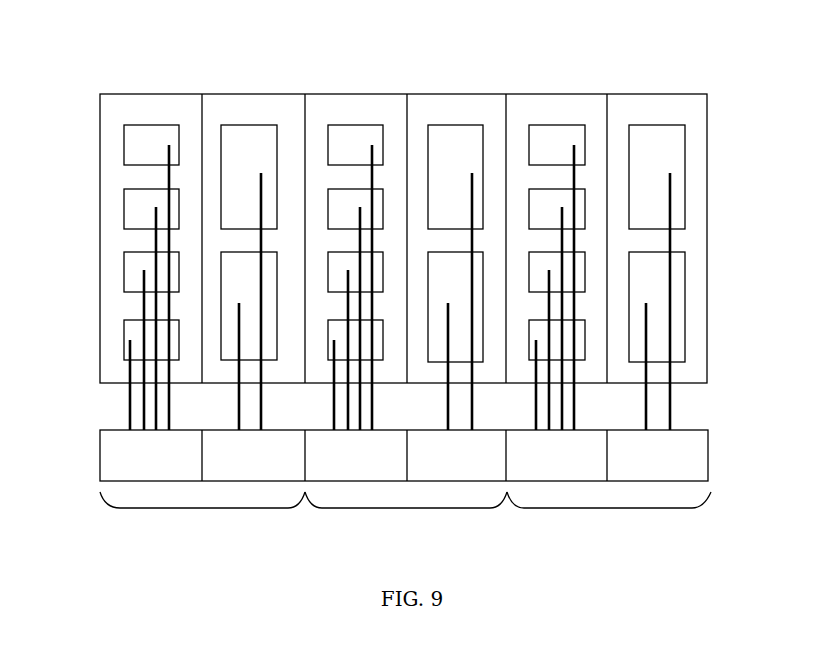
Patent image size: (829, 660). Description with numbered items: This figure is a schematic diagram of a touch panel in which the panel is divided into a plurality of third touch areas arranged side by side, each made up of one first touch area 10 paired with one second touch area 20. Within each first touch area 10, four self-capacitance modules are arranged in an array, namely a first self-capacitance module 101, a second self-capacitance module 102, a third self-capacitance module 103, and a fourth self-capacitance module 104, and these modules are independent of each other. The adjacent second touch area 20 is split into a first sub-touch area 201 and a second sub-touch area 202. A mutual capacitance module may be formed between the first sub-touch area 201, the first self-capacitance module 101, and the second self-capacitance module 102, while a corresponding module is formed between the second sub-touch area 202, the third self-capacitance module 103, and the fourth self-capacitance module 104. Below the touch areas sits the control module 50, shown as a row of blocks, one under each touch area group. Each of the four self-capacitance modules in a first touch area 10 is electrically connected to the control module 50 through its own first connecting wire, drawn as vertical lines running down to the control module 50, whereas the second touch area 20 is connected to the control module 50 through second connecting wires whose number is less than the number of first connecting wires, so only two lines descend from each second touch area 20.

The first touch area 10 is at (166, 108).
The second touch area 20 is at (247, 108).
The first self-capacitance module 101 is at (137, 152).
The second self-capacitance module 102 is at (135, 206).
The third self-capacitance module 103 is at (132, 266).
The fourth self-capacitance module 104 is at (132, 336).
The first sub-touch area 201 is at (685, 182).
The second sub-touch area 202 is at (685, 308).
The control module 50 is at (202, 508).